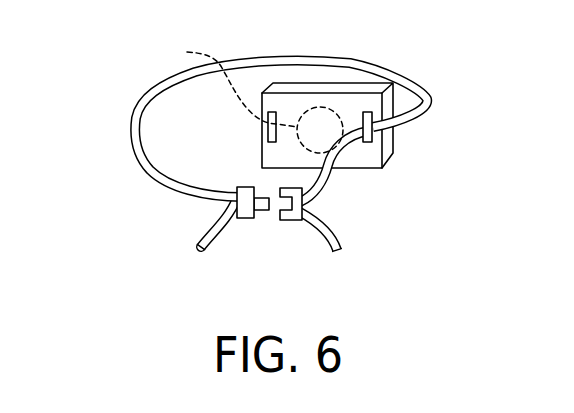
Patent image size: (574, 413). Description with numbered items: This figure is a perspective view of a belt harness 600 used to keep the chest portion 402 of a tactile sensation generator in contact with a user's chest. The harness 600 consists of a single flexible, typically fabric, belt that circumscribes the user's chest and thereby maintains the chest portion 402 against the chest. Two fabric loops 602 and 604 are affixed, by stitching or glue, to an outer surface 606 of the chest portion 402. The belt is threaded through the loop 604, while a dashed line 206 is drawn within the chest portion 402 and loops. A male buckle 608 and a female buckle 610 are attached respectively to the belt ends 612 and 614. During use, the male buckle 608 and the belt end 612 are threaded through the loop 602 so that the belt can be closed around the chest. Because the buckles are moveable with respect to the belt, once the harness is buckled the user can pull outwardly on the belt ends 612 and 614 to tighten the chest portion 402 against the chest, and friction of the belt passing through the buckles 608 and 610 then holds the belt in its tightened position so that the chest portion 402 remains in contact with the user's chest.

The belt harness 600 is at (115, 110).
The hidden conductor 206 is at (234, 91).
The chest portion 402 is at (282, 102).
The fabric loop 602 is at (267, 133).
The fabric loop 604 is at (383, 143).
The outer surface 606 is at (370, 158).
The male buckle 608 is at (244, 232).
The female buckle 610 is at (288, 237).
The belt end 612 is at (207, 222).
The belt end 614 is at (338, 232).